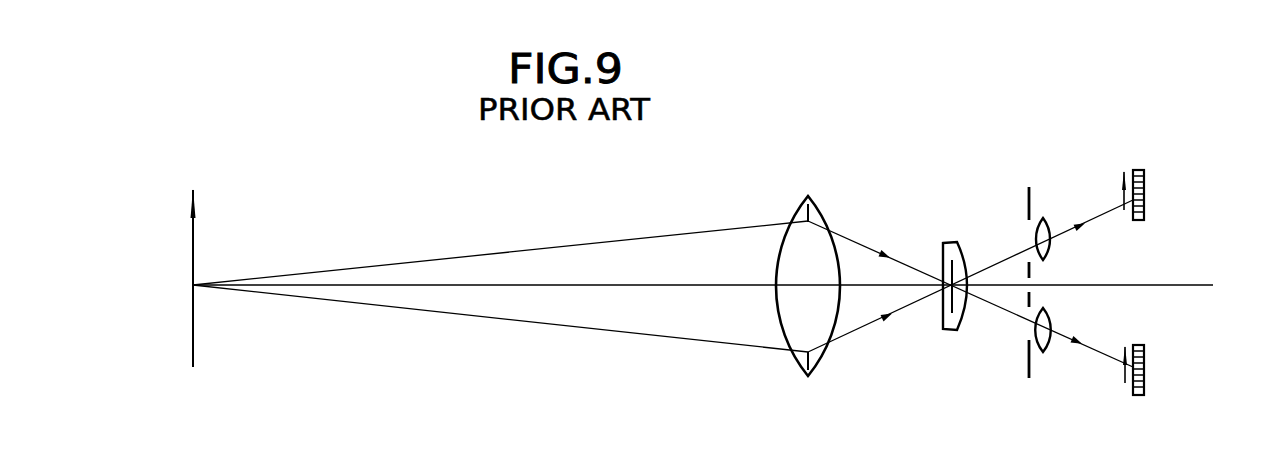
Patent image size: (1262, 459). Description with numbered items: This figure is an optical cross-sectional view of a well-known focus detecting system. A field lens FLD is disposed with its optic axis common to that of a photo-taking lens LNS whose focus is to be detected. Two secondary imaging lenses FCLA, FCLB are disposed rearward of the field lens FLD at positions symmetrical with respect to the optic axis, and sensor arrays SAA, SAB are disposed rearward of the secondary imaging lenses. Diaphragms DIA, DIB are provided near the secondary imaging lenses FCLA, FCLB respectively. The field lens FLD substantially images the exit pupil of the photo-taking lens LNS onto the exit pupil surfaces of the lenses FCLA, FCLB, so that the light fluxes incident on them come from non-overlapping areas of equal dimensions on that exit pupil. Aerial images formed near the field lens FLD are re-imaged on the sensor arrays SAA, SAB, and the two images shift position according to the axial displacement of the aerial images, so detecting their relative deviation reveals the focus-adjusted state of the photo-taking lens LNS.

The photo-taking lens LNS is at (808, 198).
The field lens FLD is at (946, 242).
The diaphragm DIA is at (1027, 200).
The diaphragm DIB is at (1033, 298).
The secondary imaging lens FCLA is at (1047, 218).
The secondary imaging lens FCLB is at (1048, 352).
The sensor array SAA is at (1145, 175).
The sensor array SAB is at (1146, 382).